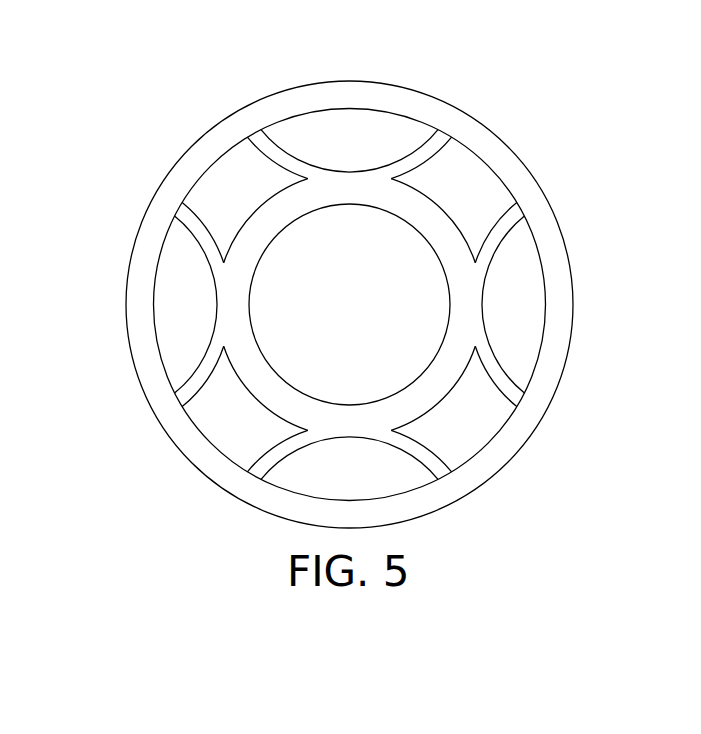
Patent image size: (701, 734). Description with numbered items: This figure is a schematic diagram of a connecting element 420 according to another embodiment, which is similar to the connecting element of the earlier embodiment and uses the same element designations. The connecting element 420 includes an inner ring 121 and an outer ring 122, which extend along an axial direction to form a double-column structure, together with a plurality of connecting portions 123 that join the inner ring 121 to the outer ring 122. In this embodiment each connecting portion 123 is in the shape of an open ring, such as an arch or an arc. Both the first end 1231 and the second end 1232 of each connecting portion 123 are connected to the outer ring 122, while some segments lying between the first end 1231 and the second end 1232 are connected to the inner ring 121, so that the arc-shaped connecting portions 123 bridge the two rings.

The connecting element 420 is at (140, 110).
The inner ring 121 is at (439, 138).
The outer ring 122 is at (525, 183).
The connecting portion 123 is at (363, 279).
The first end 1231 is at (266, 137).
The second end 1232 is at (453, 252).